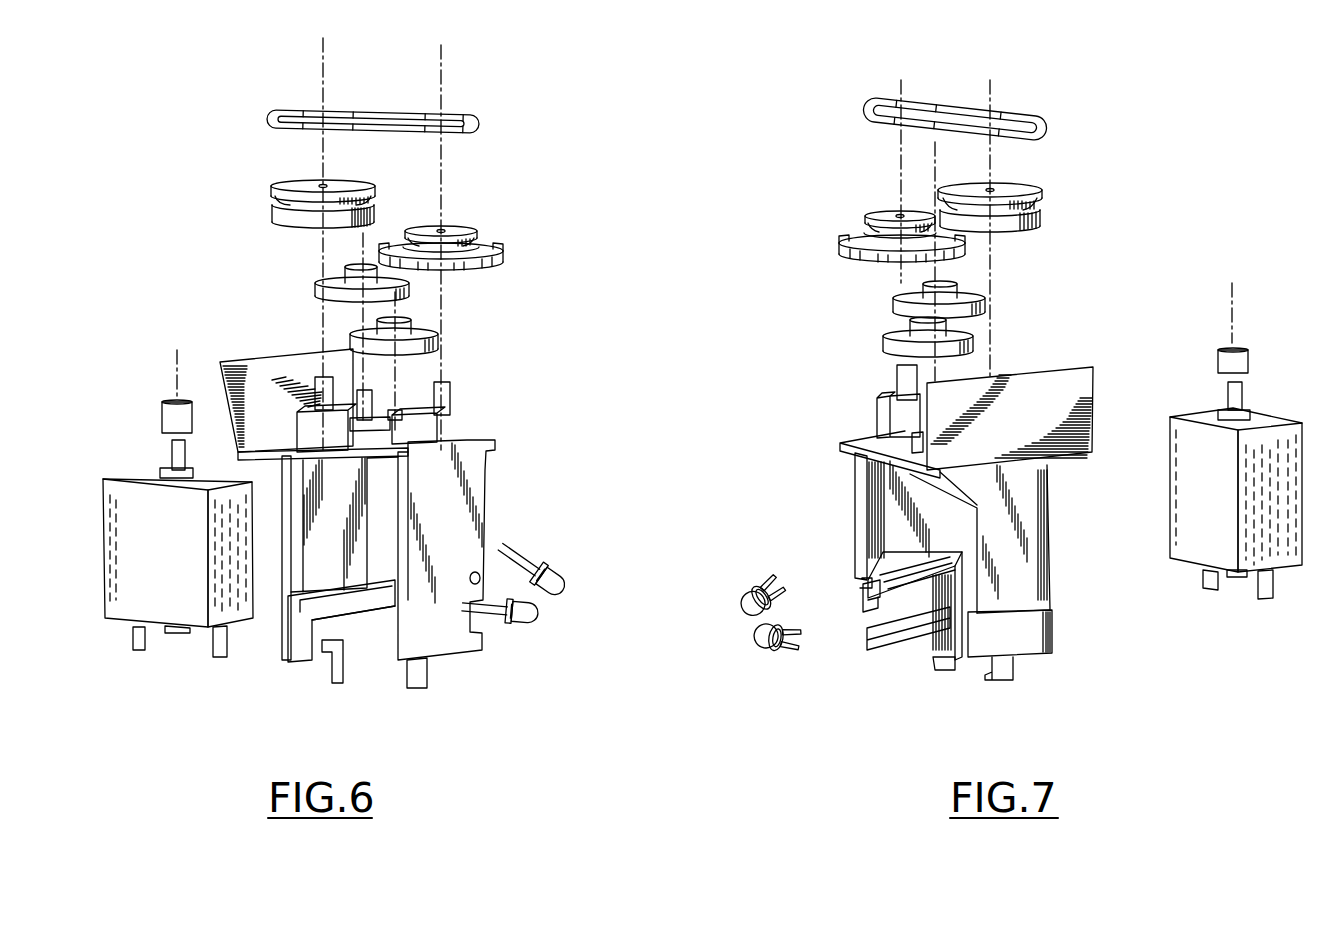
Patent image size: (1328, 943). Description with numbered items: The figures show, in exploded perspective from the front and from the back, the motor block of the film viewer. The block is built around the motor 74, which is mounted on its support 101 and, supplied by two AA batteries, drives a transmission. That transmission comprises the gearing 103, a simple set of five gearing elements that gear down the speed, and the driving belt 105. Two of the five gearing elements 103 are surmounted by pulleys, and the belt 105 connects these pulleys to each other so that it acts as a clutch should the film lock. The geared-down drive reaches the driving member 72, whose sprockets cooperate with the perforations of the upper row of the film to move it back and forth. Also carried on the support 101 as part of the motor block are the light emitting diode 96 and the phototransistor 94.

In FIG. 6, the driving member 72 is at (458, 226).
In FIG. 7, the driving member 72 is at (866, 231).
In FIG. 6, the motor 74 is at (186, 577).
In FIG. 7, the motor 74 is at (1222, 509).
In FIG. 6, the phototransistor 94 is at (780, 655).
In FIG. 6, the light emitting diode 96 is at (762, 585).
In FIG. 6, the support 101 is at (483, 466).
In FIG. 7, the support 101 is at (1003, 557).
In FIG. 6, the gearing elements 103 is at (342, 326).
In FIG. 7, the gearing elements 103 is at (987, 331).
In FIG. 6, the belt 105 is at (264, 115).
In FIG. 7, the belt 105 is at (866, 106).